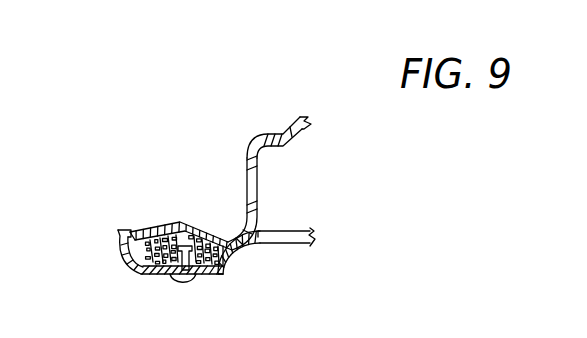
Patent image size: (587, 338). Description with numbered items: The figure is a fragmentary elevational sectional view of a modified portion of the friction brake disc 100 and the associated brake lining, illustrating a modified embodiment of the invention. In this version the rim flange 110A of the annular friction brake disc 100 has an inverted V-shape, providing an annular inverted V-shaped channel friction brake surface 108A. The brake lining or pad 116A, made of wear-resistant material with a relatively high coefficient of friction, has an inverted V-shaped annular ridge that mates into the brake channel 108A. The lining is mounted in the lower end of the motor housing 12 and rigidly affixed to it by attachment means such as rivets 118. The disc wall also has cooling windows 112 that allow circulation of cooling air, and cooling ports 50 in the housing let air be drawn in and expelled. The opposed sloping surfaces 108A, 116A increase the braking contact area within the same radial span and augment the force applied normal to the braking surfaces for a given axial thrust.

The housing 12 is at (122, 250).
The cooling ports 50 is at (297, 237).
The friction brake disc 100 is at (264, 128).
The inverted V-shaped channel friction brake surface 108A is at (181, 222).
The rim flange 110A is at (155, 231).
The cooling windows 112 is at (252, 178).
The brake lining 116A is at (147, 276).
The rivets 118 is at (185, 284).